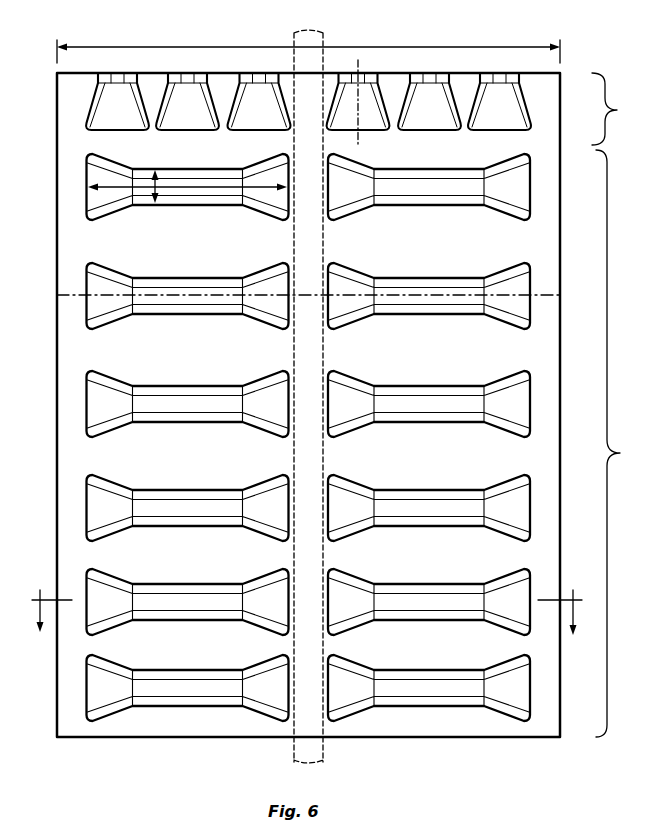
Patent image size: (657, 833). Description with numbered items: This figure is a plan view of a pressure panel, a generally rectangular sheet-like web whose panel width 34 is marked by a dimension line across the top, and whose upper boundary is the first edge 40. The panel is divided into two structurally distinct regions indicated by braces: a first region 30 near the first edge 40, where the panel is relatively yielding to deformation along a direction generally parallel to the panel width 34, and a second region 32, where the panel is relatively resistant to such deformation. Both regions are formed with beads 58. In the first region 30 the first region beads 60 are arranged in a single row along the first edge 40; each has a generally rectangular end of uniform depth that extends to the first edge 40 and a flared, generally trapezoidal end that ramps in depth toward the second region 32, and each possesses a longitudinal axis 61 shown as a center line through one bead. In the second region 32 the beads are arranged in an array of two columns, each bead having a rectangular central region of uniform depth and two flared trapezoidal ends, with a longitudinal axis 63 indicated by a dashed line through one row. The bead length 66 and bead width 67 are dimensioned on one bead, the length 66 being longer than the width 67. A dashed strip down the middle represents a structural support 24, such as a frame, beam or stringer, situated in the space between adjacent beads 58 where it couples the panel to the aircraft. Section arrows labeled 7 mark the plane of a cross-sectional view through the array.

The section line 7- 7 is at (304, 612).
The structural support 24 is at (323, 33).
The first region 30 is at (617, 110).
The second region 32 is at (620, 453).
The panel width 34 is at (136, 46).
The first edge 40 is at (467, 73).
The beads 58 is at (384, 87).
The first region beads 60 is at (268, 130).
The longitudinal axis 61 is at (360, 140).
The longitudinal axis 63 is at (541, 302).
The bead length 66 is at (82, 184).
The bead width 67 is at (166, 151).